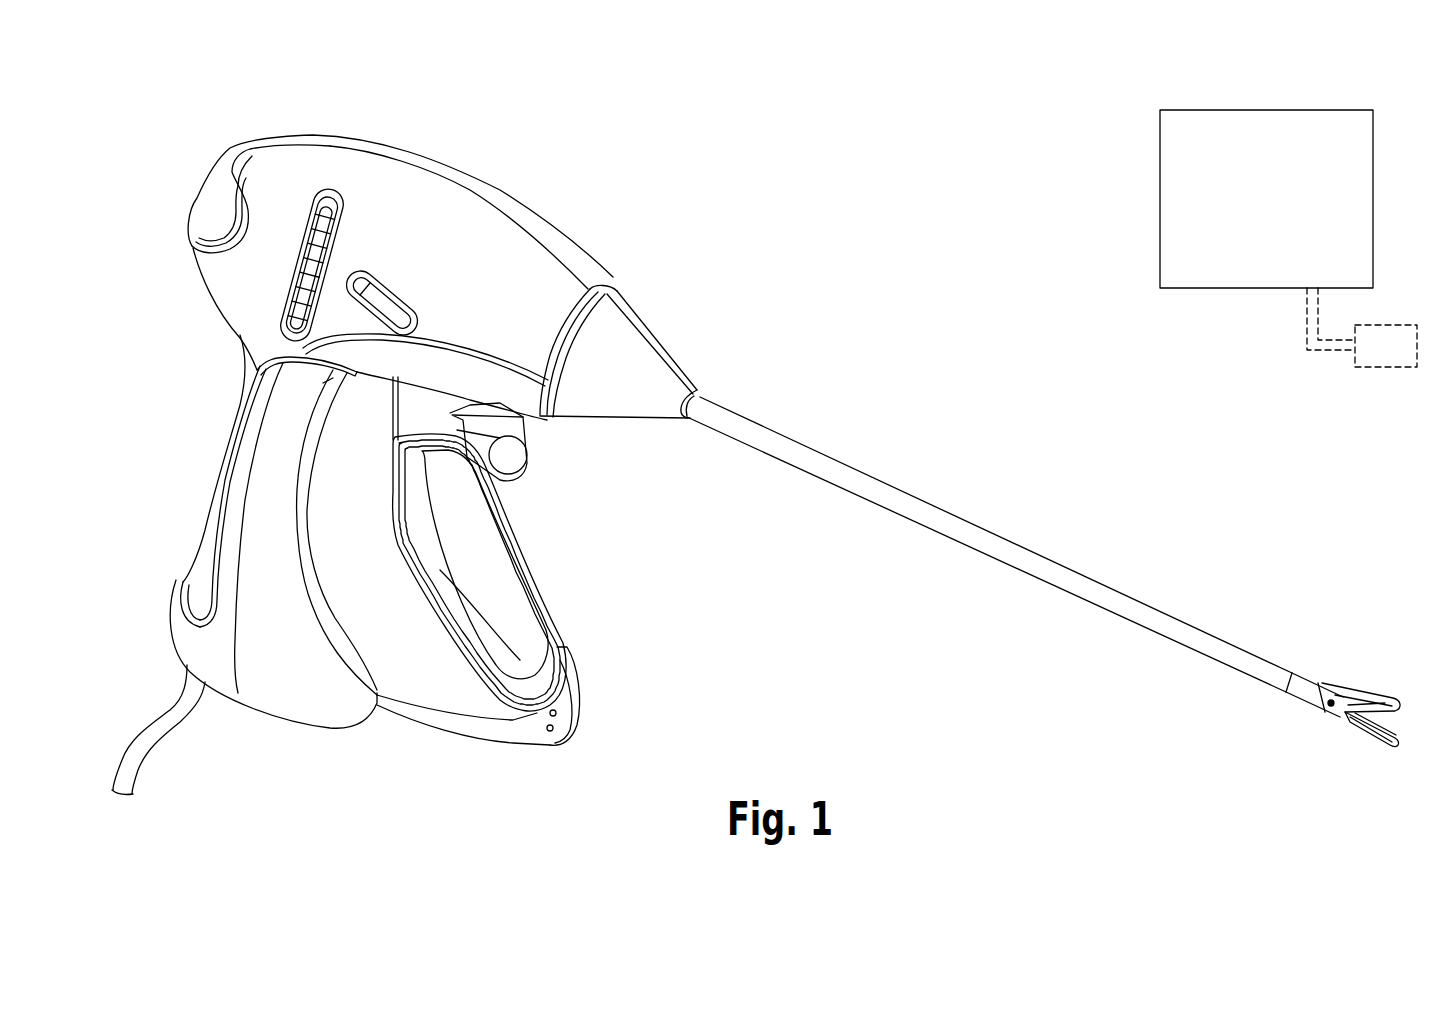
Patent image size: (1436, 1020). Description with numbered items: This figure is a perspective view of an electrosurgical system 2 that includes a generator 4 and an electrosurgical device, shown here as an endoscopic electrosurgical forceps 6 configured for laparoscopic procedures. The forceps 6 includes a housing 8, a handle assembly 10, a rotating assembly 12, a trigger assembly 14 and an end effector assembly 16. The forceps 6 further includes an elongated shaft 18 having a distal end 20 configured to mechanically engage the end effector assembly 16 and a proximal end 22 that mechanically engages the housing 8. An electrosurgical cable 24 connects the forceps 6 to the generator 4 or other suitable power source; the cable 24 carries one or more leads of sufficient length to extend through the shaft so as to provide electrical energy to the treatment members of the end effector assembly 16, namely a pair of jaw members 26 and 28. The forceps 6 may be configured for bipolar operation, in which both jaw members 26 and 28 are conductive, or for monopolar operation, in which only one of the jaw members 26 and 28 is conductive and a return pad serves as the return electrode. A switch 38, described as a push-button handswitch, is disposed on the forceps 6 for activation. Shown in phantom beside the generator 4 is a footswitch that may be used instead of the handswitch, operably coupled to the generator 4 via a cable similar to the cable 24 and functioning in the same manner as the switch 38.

The electrosurgical system 2 is at (798, 203).
The generator 4 is at (1312, 109).
The endoscopic electrosurgical forceps 6 is at (443, 156).
The housing 8 is at (563, 260).
The handle assembly 10 is at (418, 762).
The rotating assembly 12 is at (287, 278).
The trigger assembly 14 is at (517, 457).
The end effector assembly 16 is at (1388, 692).
The shaft 18 is at (1090, 583).
The distal end 20 is at (1328, 704).
The proximal end 22 is at (732, 418).
The electrosurgical cable 24 is at (135, 758).
The jaw member 26 is at (1398, 690).
The jaw member 28 is at (1355, 724).
The switch 38 is at (200, 218).